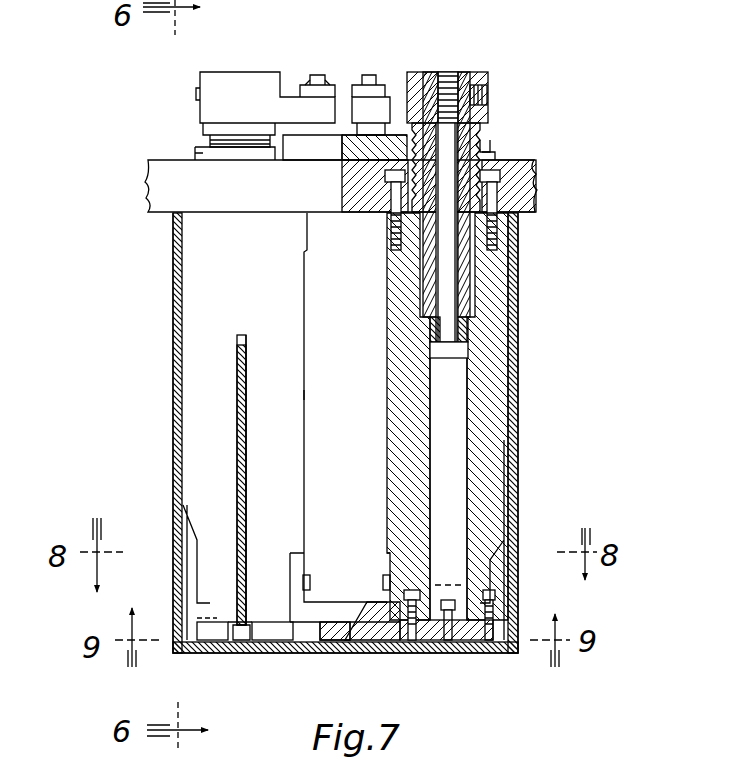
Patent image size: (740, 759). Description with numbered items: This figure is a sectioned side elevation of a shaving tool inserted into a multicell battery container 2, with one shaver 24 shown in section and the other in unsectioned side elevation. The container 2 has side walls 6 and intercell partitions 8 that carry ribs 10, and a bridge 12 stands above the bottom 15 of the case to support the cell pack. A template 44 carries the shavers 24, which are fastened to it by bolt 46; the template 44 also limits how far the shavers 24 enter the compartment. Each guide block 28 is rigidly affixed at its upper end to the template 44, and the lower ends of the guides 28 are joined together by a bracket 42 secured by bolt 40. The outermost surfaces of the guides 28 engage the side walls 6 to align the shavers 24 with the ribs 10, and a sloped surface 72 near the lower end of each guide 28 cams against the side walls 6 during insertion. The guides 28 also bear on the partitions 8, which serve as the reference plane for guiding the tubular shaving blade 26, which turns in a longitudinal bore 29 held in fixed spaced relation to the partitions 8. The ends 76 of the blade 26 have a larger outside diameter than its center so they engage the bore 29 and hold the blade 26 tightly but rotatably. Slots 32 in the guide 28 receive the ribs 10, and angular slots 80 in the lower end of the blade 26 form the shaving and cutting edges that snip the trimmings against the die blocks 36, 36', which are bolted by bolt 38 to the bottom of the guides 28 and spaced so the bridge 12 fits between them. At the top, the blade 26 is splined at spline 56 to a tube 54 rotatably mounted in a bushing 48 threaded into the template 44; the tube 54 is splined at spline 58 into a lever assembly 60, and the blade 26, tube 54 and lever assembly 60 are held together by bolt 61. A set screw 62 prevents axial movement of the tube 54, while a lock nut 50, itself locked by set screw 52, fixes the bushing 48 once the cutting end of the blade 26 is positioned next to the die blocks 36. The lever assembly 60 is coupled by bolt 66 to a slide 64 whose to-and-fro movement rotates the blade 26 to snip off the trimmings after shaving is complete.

The multicell battery container 2 is at (170, 309).
The side walls 6 is at (173, 385).
The intercell partitions 8 is at (303, 397).
The ribs 10 is at (248, 505).
The bridge 12 is at (237, 632).
The bottom 15 is at (362, 650).
The shaver 24 is at (384, 405).
The tubular shaving blade 26 is at (475, 440).
The guide block 28 is at (293, 363).
The longitudinal bore 29 is at (420, 470).
The slots 32 is at (240, 455).
The die blocks 36 is at (323, 666).
The die block 36' is at (341, 661).
The bolt 38 is at (490, 640).
The bolt 40 is at (308, 580).
The bracket 42 is at (345, 620).
The template 44 is at (527, 205).
The bolt 46 is at (395, 218).
The bushing 48 is at (210, 133).
The lock nut 50 is at (205, 152).
The set screw 52 is at (495, 152).
The tube 54 is at (466, 283).
The spline 56 is at (468, 334).
The spline 58 is at (455, 95).
The lever assembly 60 is at (270, 100).
The bolt 61 is at (442, 261).
The set screw 62 is at (200, 90).
The slide 64 is at (305, 147).
The bolt 66 is at (364, 85).
The sloped surface 72 is at (187, 510).
The ends 76 is at (470, 322).
The angular slots 80 is at (448, 598).